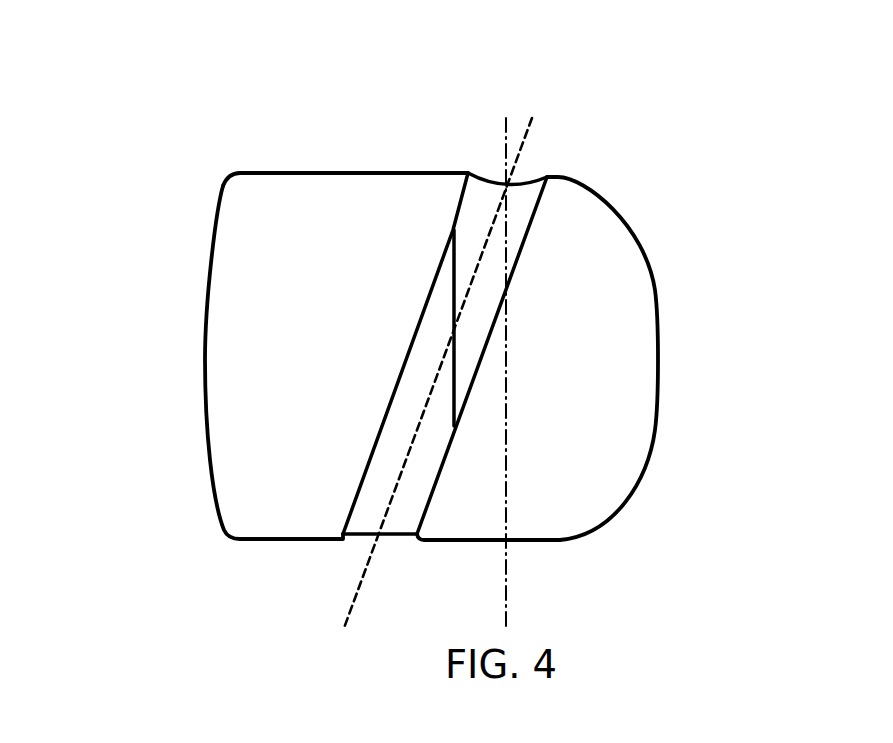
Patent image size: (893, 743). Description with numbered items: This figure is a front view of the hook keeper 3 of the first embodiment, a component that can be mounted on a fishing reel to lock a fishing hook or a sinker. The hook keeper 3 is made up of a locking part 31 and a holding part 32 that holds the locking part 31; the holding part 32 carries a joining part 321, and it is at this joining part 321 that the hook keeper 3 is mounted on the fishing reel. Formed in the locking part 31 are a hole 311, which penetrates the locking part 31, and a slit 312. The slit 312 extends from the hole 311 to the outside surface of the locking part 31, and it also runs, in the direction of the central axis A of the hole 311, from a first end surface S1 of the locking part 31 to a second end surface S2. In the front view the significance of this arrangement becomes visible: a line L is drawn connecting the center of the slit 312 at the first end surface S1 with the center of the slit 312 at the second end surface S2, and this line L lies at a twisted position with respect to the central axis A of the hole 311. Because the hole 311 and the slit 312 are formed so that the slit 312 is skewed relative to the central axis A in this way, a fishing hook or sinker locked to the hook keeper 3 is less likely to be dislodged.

The hook keeper 3 is at (400, 353).
The locking part 31 is at (626, 234).
The holding part 32 is at (273, 320).
The hole 311 is at (532, 170).
The slit 312 is at (433, 218).
The joining part 321 is at (195, 352).
The first end surface S1 is at (450, 160).
The second end surface S2 is at (442, 560).
The line L is at (370, 567).
The central axis A is at (507, 572).